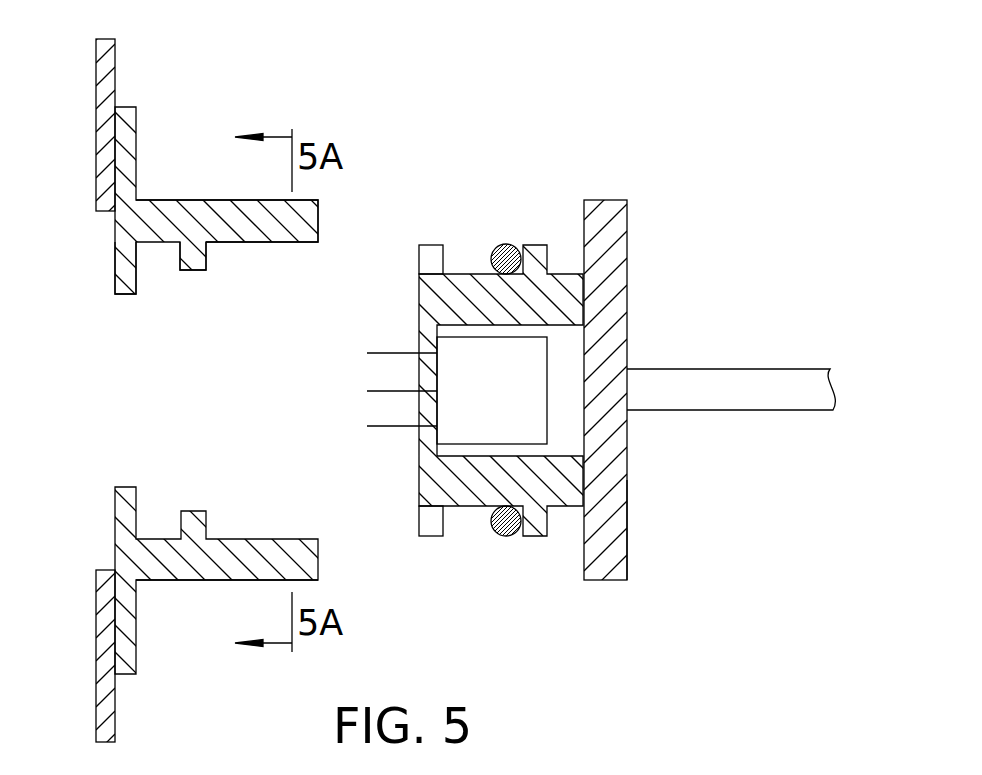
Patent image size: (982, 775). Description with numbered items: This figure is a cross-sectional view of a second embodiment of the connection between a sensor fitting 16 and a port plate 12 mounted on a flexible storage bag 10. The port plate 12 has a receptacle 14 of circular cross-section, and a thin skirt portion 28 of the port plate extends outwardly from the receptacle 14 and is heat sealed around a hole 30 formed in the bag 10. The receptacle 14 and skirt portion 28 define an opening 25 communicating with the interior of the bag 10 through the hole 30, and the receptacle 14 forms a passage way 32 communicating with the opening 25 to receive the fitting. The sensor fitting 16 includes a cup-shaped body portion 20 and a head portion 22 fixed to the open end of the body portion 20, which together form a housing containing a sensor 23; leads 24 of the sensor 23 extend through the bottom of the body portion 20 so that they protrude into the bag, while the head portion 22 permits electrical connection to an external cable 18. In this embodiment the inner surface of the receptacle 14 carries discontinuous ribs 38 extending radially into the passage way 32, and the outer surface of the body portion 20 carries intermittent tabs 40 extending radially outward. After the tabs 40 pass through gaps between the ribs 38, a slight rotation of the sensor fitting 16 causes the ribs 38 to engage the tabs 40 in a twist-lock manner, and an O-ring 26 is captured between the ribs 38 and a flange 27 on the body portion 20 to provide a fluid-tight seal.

The flexible storage bag 10 is at (96, 60).
The port plate 12 is at (130, 125).
The receptacle 14 is at (193, 200).
The sensor fitting 16 is at (600, 188).
The external cable 18 is at (783, 381).
The body portion 20 is at (565, 490).
The head portion 22 is at (615, 512).
The sensor 23 is at (507, 415).
The leads 24 is at (372, 353).
The opening 25 is at (126, 294).
The O-ring 26 is at (506, 246).
The flange 27 is at (536, 522).
The skirt portion 28 is at (132, 593).
The hole 30 is at (102, 589).
The passage way 32 is at (263, 422).
The discontinuous ribs 38 is at (193, 263).
The intermittent tabs 40 is at (432, 252).